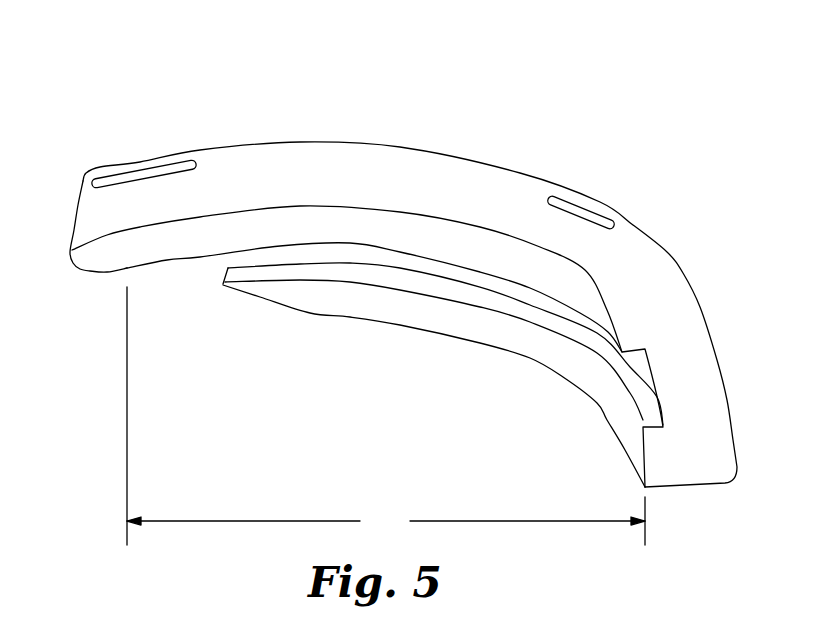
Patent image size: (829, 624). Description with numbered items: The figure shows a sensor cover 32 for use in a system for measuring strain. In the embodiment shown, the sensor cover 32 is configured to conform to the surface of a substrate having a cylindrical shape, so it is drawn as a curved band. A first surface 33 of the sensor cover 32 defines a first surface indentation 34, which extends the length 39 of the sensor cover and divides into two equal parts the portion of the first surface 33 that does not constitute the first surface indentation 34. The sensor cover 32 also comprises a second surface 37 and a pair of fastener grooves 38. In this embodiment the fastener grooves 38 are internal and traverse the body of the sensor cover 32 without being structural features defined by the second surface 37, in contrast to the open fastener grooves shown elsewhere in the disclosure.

The sensor cover 32 is at (113, 72).
The first surface 33 is at (121, 257).
The first surface indentation 34 is at (228, 256).
The second surface 37 is at (697, 295).
The fastener grooves 38 is at (155, 172).
The length 39 is at (386, 416).